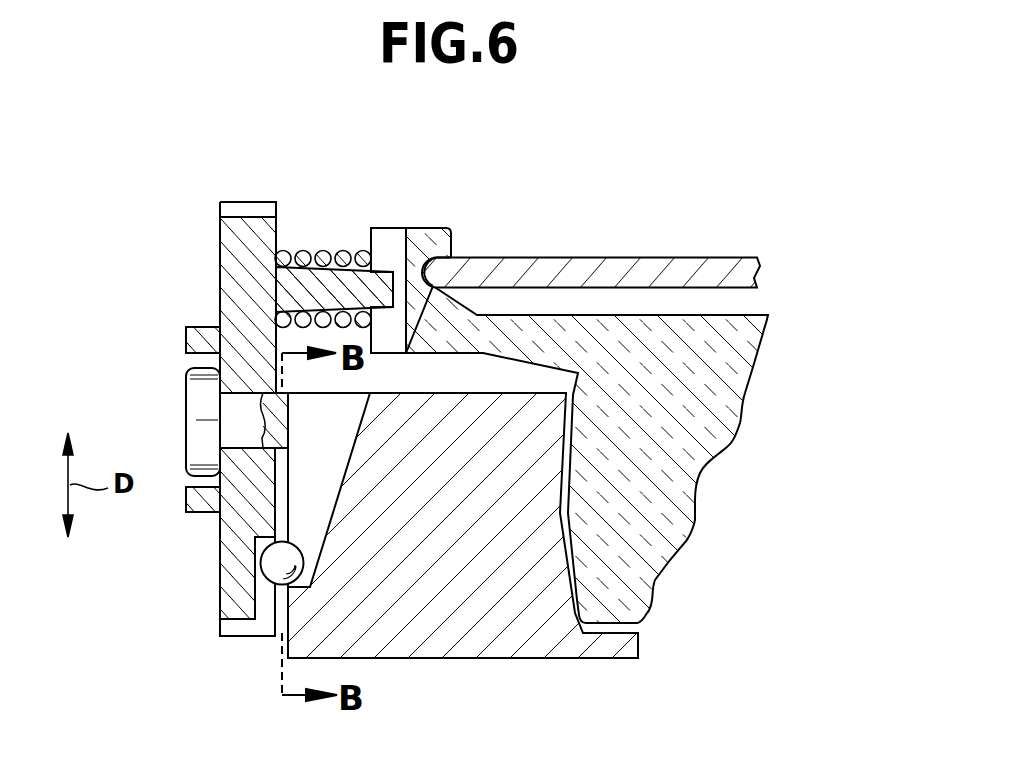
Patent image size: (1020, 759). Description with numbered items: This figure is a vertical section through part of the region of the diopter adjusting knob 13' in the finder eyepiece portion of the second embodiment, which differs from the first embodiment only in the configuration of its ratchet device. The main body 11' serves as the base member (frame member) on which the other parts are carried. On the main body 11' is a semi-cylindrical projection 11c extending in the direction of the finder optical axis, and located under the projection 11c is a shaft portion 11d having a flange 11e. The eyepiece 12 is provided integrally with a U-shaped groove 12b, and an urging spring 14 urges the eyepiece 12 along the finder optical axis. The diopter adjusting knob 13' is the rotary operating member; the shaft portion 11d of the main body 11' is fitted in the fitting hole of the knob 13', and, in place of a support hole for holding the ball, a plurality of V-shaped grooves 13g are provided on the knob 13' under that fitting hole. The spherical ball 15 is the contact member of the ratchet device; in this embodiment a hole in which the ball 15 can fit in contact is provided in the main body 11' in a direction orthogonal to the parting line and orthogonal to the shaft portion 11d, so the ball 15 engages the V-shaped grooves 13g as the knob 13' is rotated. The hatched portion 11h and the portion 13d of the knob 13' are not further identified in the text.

The eyepiece 12 is at (699, 408).
The U-shaped groove 12b is at (423, 252).
The main body 11' is at (591, 237).
The semi-cylindrical projection 11c is at (468, 257).
The body portion 11h is at (313, 502).
The diopter adjusting knob 13' is at (270, 419).
The hub portion of flange 13d is at (391, 268).
The urging spring 14 is at (325, 251).
The V-shaped grooves 13g is at (261, 628).
The shaft portion 11d is at (250, 393).
The flange 11e is at (185, 410).
The spherical ball 15 is at (261, 560).